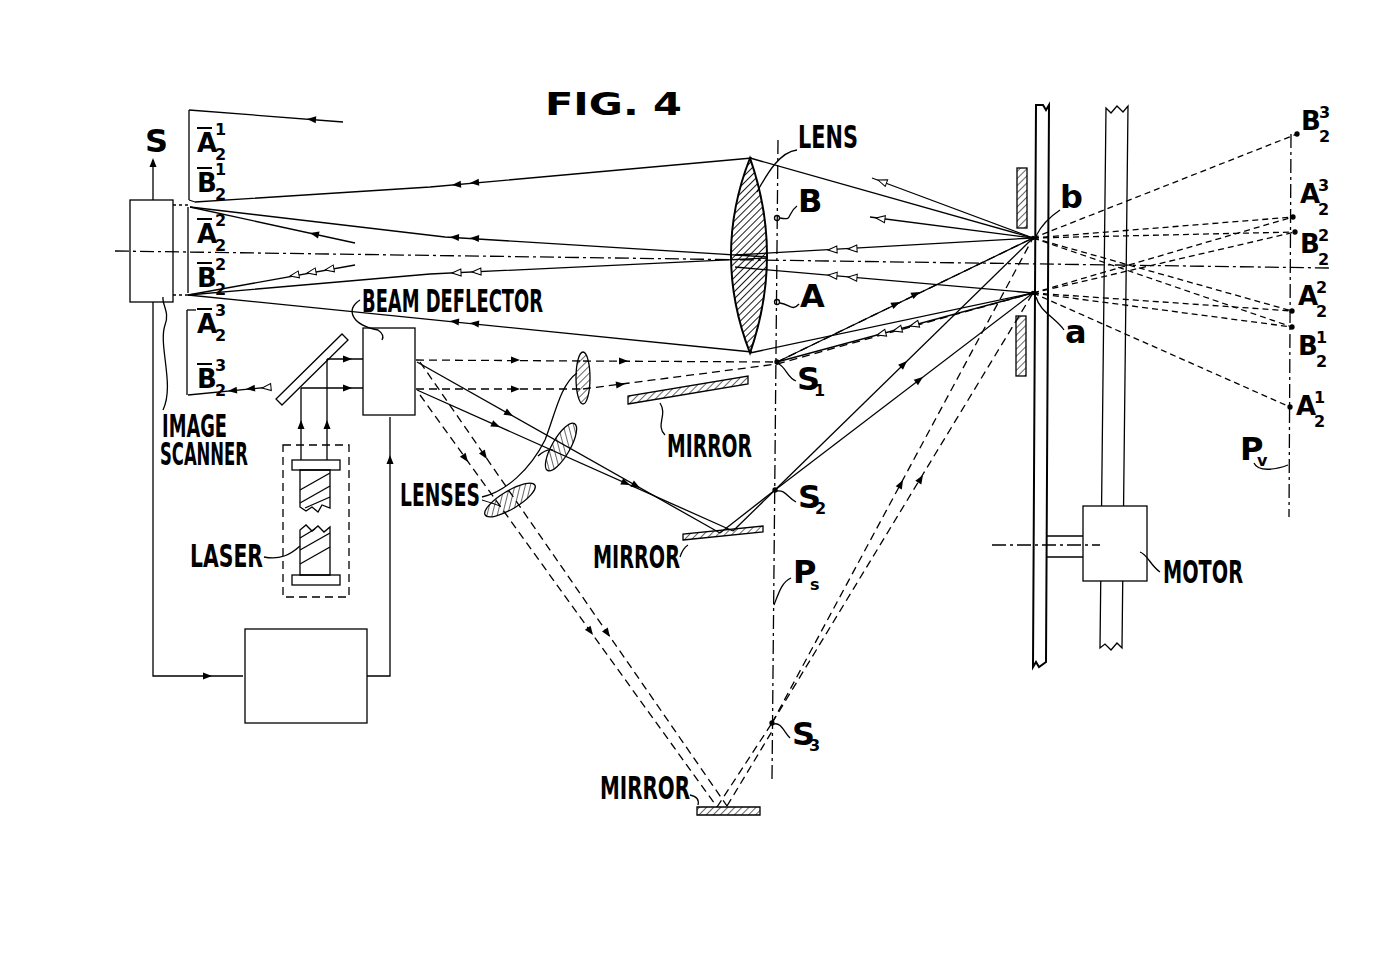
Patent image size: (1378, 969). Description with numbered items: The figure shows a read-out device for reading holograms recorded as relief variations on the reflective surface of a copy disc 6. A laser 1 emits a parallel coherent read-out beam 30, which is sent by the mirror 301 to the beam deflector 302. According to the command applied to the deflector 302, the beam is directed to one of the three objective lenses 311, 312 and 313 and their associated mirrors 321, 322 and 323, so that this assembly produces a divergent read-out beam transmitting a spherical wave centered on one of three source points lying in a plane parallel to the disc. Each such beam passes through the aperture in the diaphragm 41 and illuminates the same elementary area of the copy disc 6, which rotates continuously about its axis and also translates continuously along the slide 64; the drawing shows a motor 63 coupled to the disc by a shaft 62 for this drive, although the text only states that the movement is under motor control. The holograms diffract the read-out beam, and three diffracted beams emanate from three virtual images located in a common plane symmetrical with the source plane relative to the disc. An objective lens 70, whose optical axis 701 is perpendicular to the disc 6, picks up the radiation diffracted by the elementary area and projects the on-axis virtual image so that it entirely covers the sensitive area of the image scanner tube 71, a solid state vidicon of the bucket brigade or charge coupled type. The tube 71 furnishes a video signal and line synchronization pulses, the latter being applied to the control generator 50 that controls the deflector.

The laser 1 is at (300, 515).
The copy disc 6 is at (1036, 436).
The read-out beam 30 is at (312, 405).
The diaphragm 41 is at (1016, 362).
The control generator 50 is at (318, 723).
The motor shaft 62 is at (1005, 545).
The motor 63 is at (1133, 528).
The slide 64 is at (1110, 477).
The objective lens 70 is at (742, 222).
The image scanner tube 71 is at (143, 300).
The mirror 301 is at (308, 362).
The beam deflector 302 is at (372, 343).
The objective lens 311 is at (582, 354).
The objective lens 312 is at (577, 432).
The objective lens 313 is at (533, 498).
The mirror 321 is at (697, 392).
The mirror 322 is at (700, 545).
The mirror 323 is at (743, 804).
The optical axis 701 is at (515, 258).